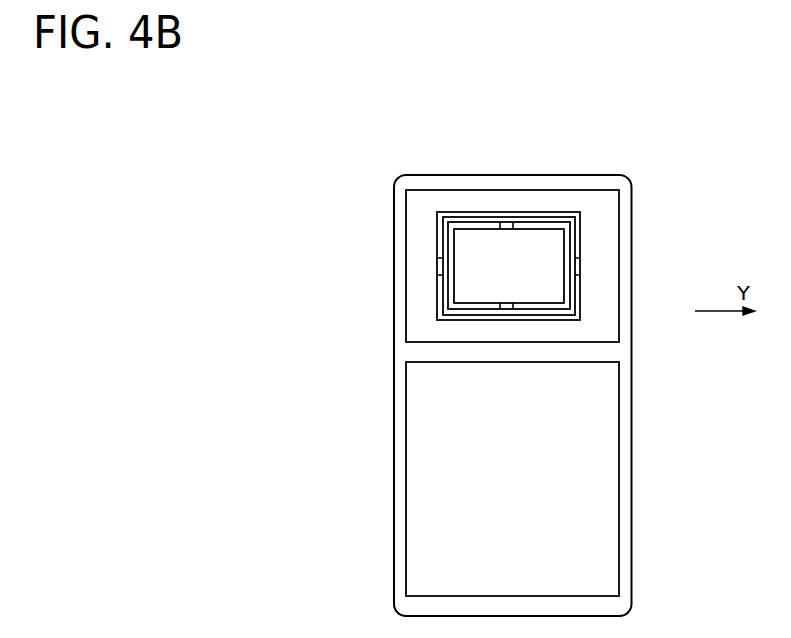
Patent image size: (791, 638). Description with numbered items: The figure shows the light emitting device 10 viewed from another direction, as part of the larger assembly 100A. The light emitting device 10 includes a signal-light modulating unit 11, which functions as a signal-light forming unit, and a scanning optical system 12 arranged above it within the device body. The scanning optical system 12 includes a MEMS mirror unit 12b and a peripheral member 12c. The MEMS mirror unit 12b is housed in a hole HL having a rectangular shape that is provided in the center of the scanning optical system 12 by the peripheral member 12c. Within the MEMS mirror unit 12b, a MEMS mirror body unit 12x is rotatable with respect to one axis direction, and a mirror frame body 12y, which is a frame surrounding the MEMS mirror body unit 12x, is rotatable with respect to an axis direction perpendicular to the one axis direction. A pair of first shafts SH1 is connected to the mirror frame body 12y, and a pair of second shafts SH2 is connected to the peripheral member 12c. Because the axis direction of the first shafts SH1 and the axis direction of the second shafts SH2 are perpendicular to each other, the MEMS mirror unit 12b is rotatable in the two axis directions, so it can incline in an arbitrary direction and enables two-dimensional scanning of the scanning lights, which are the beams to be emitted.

The electronic apparatus 100A is at (458, 338).
The light emitting device 10 is at (471, 358).
The scanning optical system 12 is at (481, 232).
The MEMS mirror unit 12b is at (432, 266).
The peripheral member 12c is at (416, 305).
The MEMS mirror body unit 12x is at (530, 240).
The mirror frame body 12y is at (473, 218).
The first shafts SH1 is at (510, 220).
The second shafts SH2 is at (580, 265).
The hole HL is at (569, 215).
The signal-light modulating unit 11 is at (422, 433).